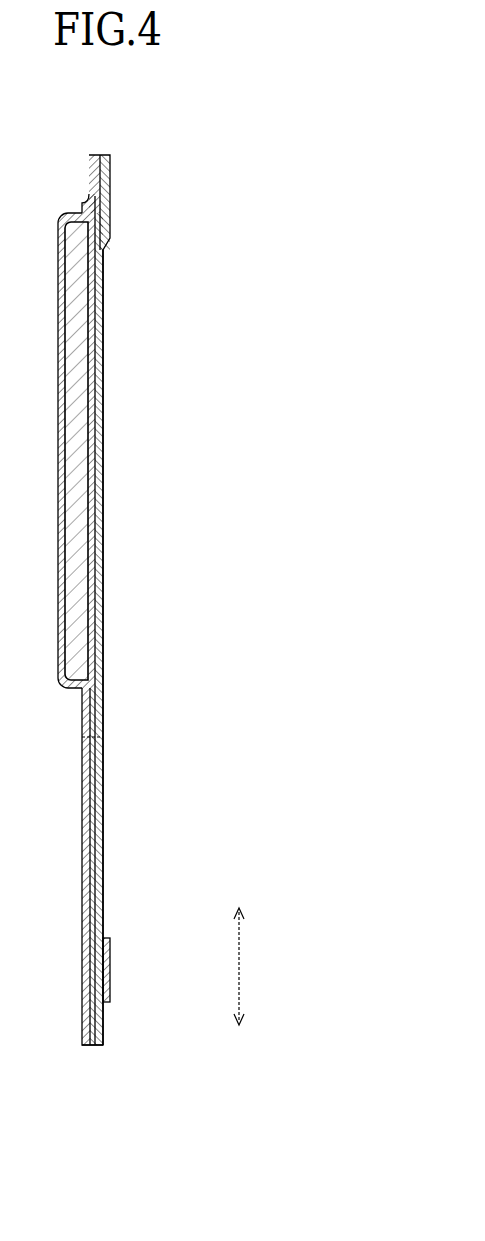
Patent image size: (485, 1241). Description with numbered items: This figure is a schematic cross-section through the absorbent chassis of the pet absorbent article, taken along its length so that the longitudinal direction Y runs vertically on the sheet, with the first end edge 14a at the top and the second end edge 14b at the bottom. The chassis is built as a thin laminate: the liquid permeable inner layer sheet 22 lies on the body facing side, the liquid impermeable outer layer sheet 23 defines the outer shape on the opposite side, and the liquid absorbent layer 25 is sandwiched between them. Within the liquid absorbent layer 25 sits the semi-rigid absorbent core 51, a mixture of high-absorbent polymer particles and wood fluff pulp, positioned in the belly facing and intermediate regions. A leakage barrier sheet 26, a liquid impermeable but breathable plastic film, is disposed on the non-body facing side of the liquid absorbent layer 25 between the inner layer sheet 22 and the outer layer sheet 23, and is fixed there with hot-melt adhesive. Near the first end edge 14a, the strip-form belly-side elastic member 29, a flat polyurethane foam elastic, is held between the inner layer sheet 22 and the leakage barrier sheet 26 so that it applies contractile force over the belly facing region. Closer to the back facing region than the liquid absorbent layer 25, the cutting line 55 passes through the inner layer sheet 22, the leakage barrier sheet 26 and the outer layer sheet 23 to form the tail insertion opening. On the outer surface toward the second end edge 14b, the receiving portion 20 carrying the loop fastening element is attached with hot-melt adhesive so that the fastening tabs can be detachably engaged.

The first end edge 14a is at (98, 155).
The second end edge 14b is at (92, 1047).
The belly-side elastic member 29 is at (110, 216).
The inner layer sheet 22 is at (62, 385).
The absorbent core 51 is at (73, 437).
The liquid absorbent layer 25 is at (77, 485).
The leakage barrier sheet 26 is at (105, 362).
The outer layer sheet 23 is at (102, 405).
The cutting line 55 is at (103, 727).
The receiving portion 20 is at (110, 960).
The longitudinal direction Y is at (241, 968).